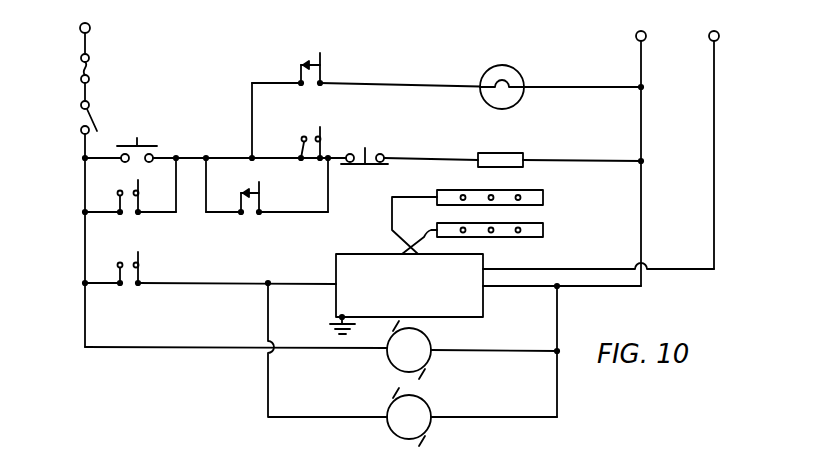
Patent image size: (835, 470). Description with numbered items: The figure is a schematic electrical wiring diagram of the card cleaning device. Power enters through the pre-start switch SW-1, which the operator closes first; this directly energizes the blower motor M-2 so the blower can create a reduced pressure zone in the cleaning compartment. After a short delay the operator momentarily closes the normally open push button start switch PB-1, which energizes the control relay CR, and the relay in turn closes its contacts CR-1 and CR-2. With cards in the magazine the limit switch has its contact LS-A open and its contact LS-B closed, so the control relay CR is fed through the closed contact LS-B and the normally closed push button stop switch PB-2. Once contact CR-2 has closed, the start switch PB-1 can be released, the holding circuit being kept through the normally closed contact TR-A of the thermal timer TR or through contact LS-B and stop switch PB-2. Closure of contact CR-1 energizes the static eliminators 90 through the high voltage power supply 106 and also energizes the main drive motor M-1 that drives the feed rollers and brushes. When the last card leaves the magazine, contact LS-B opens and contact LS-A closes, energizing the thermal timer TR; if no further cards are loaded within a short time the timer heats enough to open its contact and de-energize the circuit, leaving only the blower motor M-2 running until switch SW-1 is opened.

The electrostatic eliminators 90 is at (543, 197).
The high voltage power supply 106 is at (485, 297).
The pre-start switch SW-1 is at (80, 122).
The push button start switch PB-1 is at (146, 145).
The push button stop switch PB-2 is at (364, 164).
The limit switch contact LS-A is at (306, 79).
The limit switch contact LS-B is at (301, 151).
The thermal timer TR is at (518, 69).
The control relay CR is at (503, 153).
The control relay contact CR-1 is at (209, 277).
The control relay contact CR-2 is at (129, 195).
The thermal timer contact TR-A is at (267, 195).
The main drive motor M-1 is at (472, 417).
The blower motor M-2 is at (472, 350).